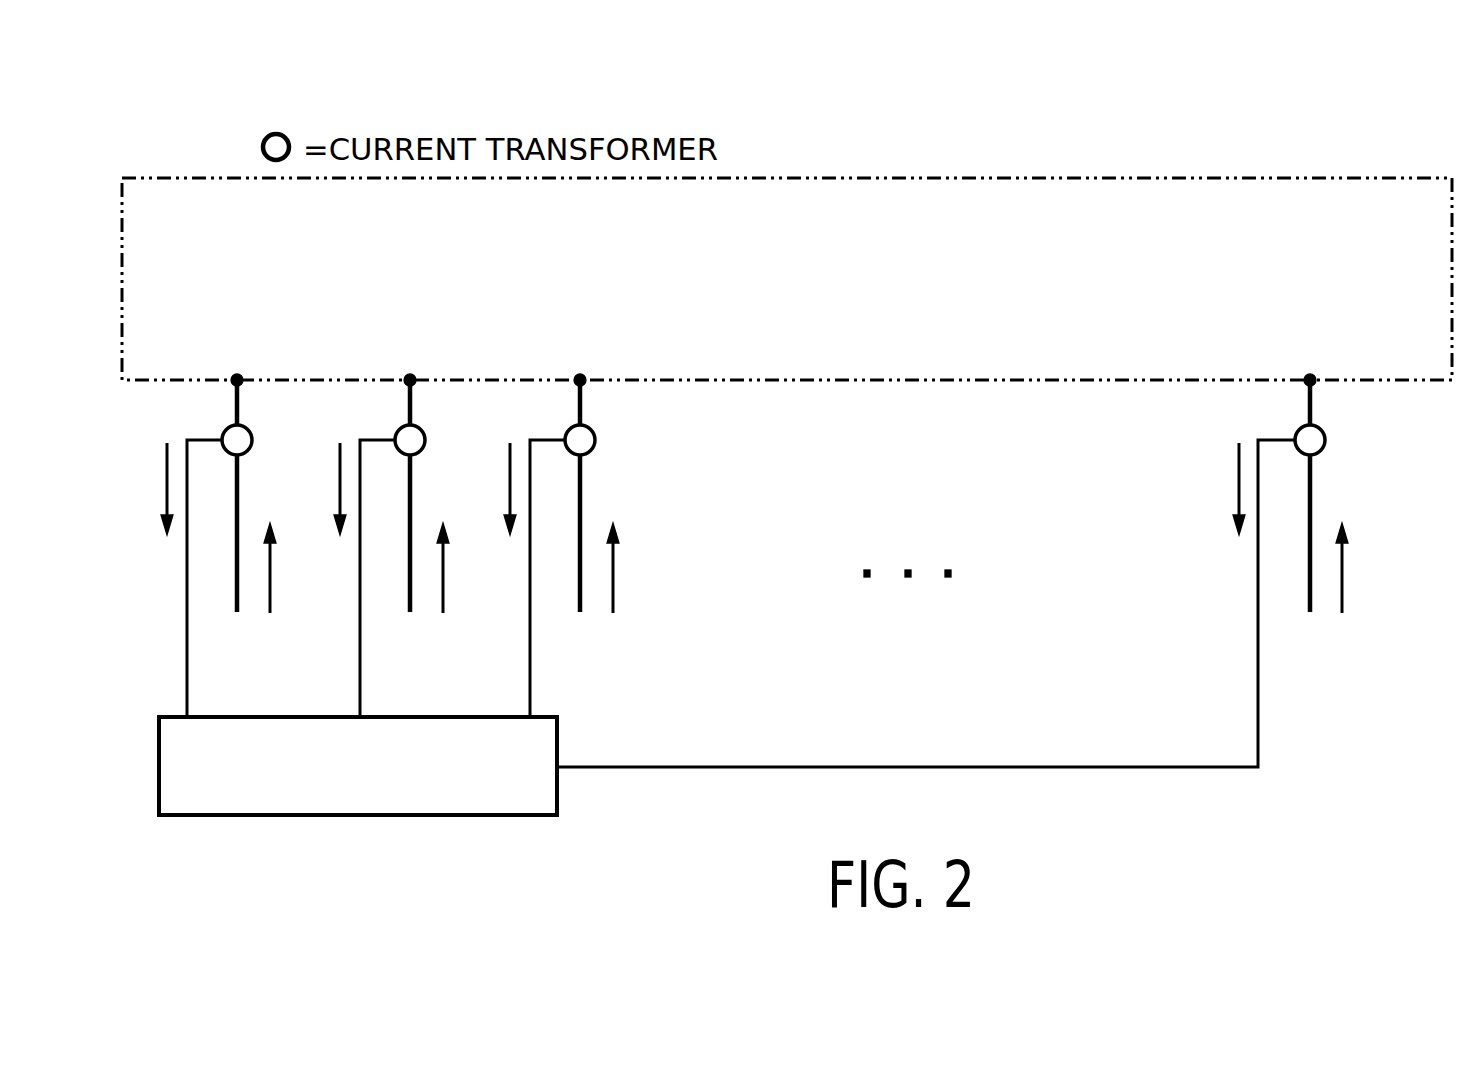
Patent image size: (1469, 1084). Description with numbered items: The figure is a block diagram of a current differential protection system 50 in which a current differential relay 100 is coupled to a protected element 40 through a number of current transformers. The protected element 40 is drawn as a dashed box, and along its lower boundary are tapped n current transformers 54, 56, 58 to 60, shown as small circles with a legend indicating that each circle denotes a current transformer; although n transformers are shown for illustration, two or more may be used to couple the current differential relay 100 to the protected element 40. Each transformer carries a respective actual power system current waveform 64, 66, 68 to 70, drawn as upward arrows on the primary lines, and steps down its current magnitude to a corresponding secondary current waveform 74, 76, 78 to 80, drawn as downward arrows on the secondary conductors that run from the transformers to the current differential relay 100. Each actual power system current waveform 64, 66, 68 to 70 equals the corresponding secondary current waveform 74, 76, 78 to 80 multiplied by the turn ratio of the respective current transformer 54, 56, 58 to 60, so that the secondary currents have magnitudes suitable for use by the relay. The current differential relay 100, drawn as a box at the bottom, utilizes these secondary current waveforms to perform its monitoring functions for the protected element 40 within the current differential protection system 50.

The protected element 40 is at (1243, 180).
The current differential protection system 50 is at (1076, 127).
The current transformer 54 is at (252, 440).
The current transformer 56 is at (425, 440).
The current transformer 58 is at (595, 440).
The current transformer 60 is at (1325, 440).
The actual power system current waveform 64 is at (270, 592).
The actual power system current waveform 66 is at (443, 592).
The actual power system current waveform 68 is at (613, 592).
The actual power system current waveform 70 is at (1342, 575).
The secondary current waveform 74 is at (187, 692).
The secondary current waveform 76 is at (360, 692).
The secondary current waveform 78 is at (530, 692).
The secondary current waveform 80 is at (1257, 687).
The current differential relay 100 is at (357, 815).